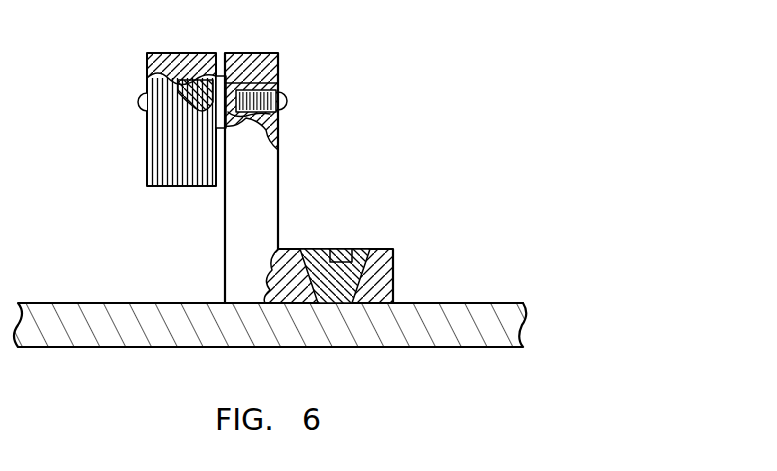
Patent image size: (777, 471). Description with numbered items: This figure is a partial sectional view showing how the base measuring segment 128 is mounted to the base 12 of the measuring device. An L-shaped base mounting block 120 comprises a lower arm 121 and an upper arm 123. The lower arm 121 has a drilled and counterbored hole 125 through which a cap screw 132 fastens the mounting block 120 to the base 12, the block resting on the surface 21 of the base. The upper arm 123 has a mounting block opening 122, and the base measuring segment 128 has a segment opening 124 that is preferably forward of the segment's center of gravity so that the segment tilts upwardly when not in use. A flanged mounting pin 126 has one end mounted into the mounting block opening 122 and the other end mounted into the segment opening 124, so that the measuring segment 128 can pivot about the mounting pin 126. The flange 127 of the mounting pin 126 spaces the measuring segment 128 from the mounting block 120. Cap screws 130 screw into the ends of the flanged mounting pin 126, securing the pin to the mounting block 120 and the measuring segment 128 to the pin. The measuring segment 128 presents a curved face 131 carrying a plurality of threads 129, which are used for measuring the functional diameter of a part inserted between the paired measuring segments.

The base 12 is at (453, 292).
The mounting surface of base plate 21 is at (432, 302).
The base mounting block 120 is at (286, 204).
The lower arm 121 is at (398, 276).
The mounting block opening 122 is at (280, 90).
The upper arm 123 is at (280, 178).
The segment opening 124 is at (260, 78).
The drilled and counterbored hole 125 is at (302, 249).
The flanged mounting pin 126 is at (283, 120).
The flange 127 is at (221, 76).
The base measuring segment 128 is at (150, 192).
The threads 129 is at (160, 158).
The cap screw 130 is at (140, 100).
The curved face 131 is at (195, 187).
The cap screw 132 is at (356, 249).